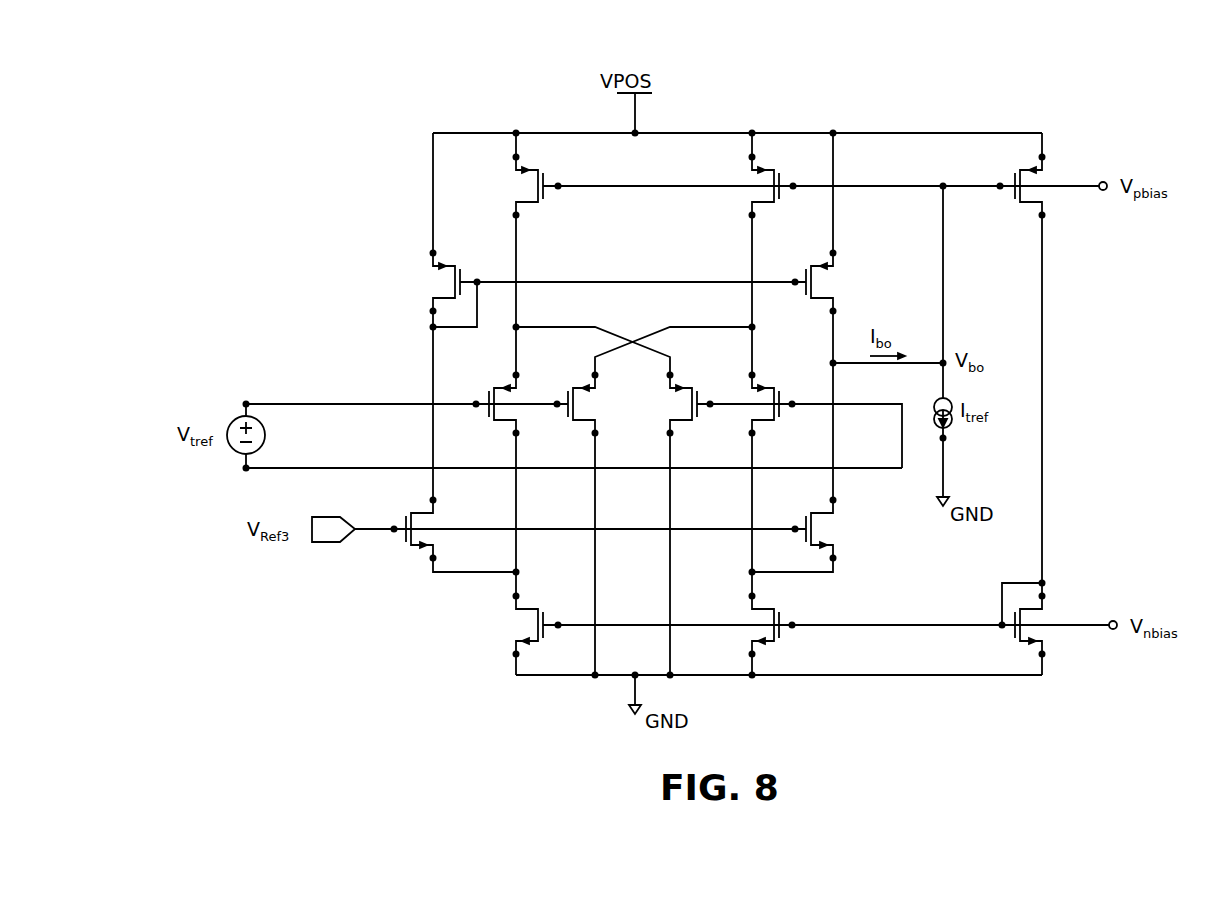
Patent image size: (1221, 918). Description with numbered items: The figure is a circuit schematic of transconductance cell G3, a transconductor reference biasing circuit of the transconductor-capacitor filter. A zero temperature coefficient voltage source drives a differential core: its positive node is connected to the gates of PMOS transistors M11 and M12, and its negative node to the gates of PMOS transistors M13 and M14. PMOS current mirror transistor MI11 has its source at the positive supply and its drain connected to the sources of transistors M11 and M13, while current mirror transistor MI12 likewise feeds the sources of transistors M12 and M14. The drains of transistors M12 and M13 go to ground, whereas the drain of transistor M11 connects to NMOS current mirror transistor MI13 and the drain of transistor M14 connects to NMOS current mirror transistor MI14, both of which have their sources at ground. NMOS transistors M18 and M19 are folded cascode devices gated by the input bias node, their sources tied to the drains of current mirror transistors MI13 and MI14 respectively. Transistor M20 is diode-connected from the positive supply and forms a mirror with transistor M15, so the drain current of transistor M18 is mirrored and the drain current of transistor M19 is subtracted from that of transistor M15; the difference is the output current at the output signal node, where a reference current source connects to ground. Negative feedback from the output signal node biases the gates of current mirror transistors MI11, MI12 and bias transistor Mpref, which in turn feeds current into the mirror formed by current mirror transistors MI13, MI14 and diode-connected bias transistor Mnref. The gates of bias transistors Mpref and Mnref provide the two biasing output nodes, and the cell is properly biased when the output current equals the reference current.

The transconductance cell G3 is at (433, 73).
The current mirror transistor MI11 is at (502, 186).
The current mirror transistor MI12 is at (735, 186).
The current mirror transistor MI13 is at (503, 625).
The current mirror transistor MI14 is at (734, 623).
The transistor M11 is at (489, 397).
The transistor M12 is at (569, 411).
The transistor M13 is at (663, 404).
The transistor M14 is at (783, 397).
The transistor M15 is at (842, 282).
The transistor M18 is at (447, 529).
The transistor M19 is at (841, 529).
The transistor M20 is at (421, 282).
The bias transistor Mpref is at (1062, 180).
The bias transistor Mnref is at (1062, 620).